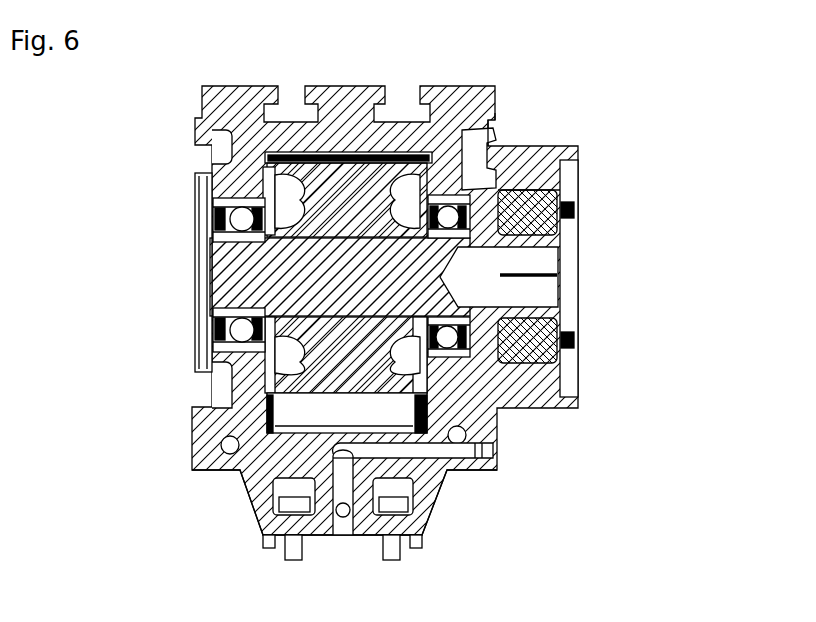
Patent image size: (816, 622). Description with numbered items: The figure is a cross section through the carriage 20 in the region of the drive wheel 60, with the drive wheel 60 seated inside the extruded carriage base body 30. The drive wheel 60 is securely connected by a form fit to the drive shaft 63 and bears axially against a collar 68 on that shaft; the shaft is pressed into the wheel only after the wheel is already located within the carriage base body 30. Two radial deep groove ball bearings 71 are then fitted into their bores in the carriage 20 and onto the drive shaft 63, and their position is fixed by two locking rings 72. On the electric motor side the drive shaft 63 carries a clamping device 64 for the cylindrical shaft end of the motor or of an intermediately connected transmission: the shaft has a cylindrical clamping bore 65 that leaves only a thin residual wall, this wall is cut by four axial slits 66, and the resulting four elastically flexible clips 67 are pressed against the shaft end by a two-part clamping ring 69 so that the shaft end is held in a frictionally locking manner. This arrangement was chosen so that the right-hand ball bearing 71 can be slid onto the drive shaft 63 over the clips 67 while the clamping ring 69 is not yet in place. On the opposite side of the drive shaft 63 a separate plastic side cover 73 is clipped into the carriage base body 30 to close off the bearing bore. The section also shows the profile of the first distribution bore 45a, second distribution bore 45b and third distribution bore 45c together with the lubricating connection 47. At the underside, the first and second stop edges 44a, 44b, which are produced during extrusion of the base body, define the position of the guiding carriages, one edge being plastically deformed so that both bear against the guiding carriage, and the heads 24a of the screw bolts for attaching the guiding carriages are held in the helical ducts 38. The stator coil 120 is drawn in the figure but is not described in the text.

The carriage 20 is at (646, 101).
The carriage base body 30 is at (348, 108).
The stator coil 120 is at (278, 156).
The collar 68 is at (455, 155).
The radial deep groove ball bearing 71 is at (496, 152).
The locking ring 72 is at (505, 182).
The side cover 73 is at (196, 210).
The drive shaft 63 is at (240, 293).
The drive wheel 60 is at (250, 378).
The clamping device 64 is at (672, 333).
The cylindrical clamping bore 65 is at (545, 318).
The slit 66 is at (533, 265).
The elastically flexible clip 67 is at (530, 290).
The two-part clamping ring 69 is at (545, 200).
The lubricating connection 47 is at (497, 441).
The first distribution bore 45a is at (332, 540).
The second distribution bore 45b is at (473, 473).
The third distribution bore 45c is at (335, 476).
The helical duct 38 is at (445, 490).
The head of screw bolt 24a is at (297, 502).
The first stop edge 44a is at (291, 556).
The second stop edge 44b is at (400, 544).